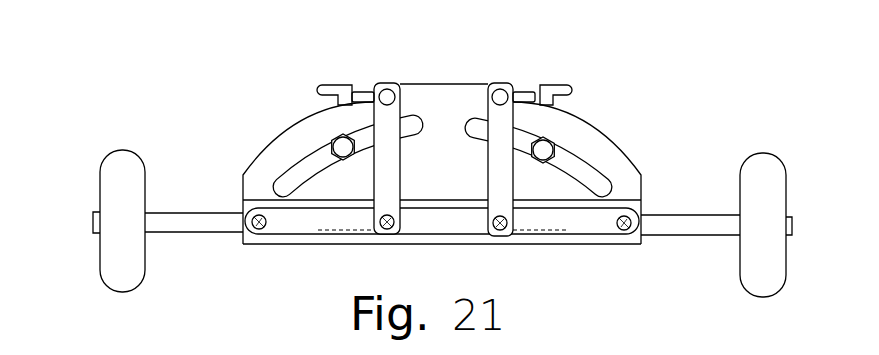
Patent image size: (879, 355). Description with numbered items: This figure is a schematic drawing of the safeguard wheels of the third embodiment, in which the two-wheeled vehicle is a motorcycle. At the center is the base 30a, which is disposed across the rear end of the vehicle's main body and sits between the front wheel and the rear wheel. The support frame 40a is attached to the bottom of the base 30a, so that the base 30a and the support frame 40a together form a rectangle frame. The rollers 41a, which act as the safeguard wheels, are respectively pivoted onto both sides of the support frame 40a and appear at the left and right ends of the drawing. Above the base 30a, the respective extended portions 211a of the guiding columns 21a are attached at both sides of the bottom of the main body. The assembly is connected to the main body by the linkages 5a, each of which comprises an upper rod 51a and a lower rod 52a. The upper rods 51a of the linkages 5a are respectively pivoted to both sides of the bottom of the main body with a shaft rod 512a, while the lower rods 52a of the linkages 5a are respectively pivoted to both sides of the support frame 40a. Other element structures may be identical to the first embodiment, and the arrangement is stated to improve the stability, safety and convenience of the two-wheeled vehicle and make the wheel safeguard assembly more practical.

The roller 41a is at (118, 150).
The support frame 40a is at (263, 198).
The base 30a is at (296, 128).
The linkage 5a is at (588, 248).
The lower rod 52a is at (308, 234).
The guiding column 21a is at (556, 146).
The upper rod 51a is at (402, 106).
The shaft rod 512a is at (525, 91).
The extended portion 211a is at (571, 90).